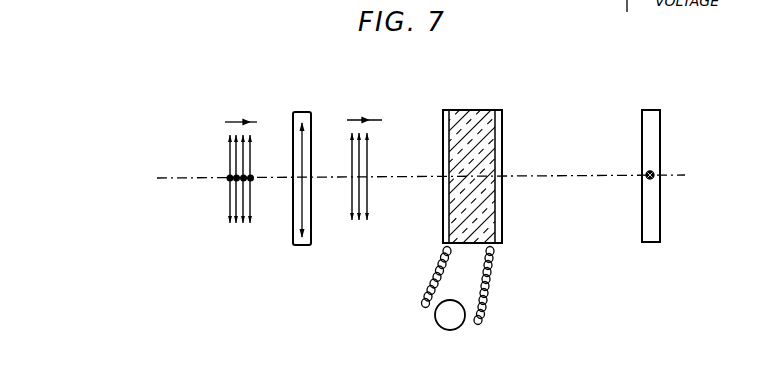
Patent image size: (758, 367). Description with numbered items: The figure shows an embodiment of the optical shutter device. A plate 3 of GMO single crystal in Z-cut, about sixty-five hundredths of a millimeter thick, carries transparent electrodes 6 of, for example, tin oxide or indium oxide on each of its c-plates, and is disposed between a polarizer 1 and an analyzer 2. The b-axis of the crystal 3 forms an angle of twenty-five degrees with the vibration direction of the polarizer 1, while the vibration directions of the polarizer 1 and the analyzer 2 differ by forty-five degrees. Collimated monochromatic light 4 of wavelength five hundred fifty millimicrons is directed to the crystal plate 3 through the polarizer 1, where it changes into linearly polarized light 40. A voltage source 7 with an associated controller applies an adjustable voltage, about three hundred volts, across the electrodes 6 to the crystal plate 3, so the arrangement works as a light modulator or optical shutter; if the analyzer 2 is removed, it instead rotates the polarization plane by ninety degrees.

The polarizer 1 is at (308, 112).
The analyzer 2 is at (651, 110).
The plate of GMO single crystal 3 is at (471, 110).
The collimated monochromatic light 4 is at (241, 156).
The linearly polarized light 40 is at (364, 156).
The transparent electrodes 6 is at (444, 121).
The voltage source 7 is at (448, 331).